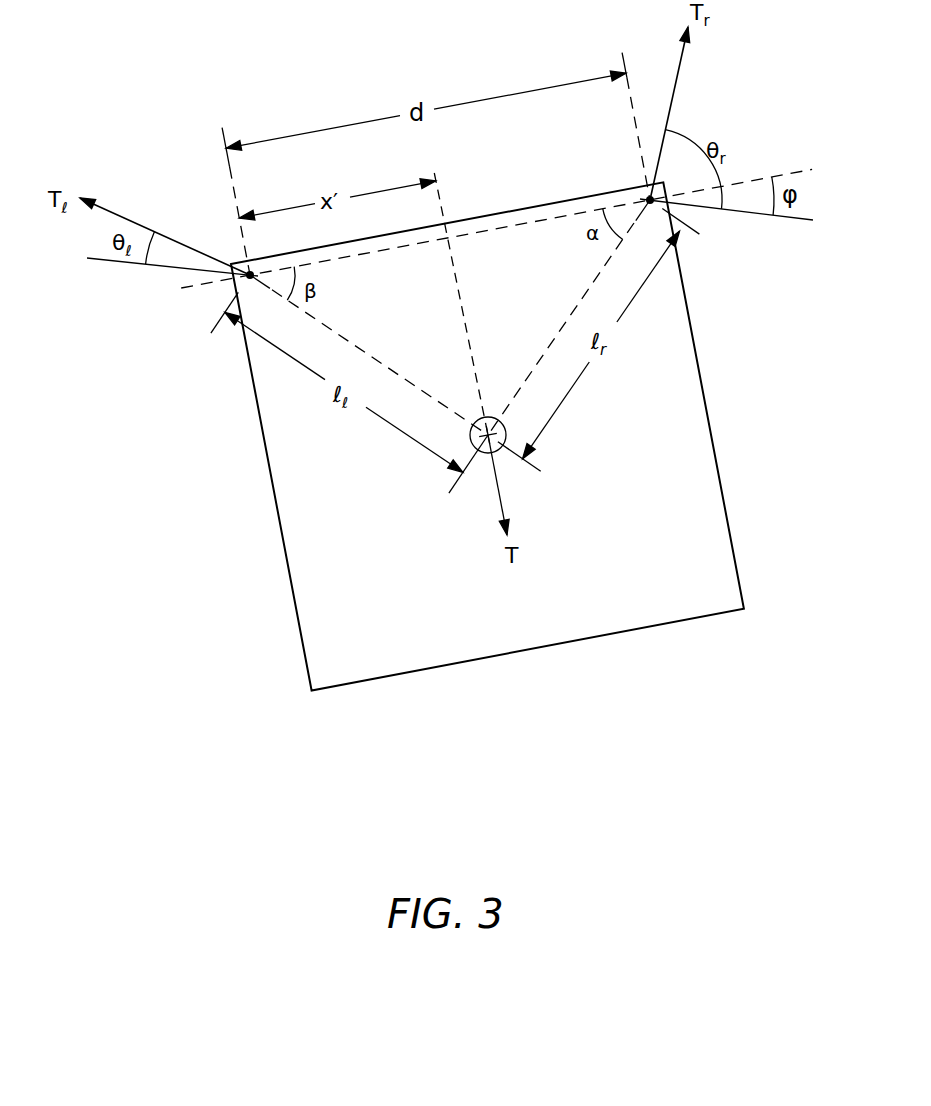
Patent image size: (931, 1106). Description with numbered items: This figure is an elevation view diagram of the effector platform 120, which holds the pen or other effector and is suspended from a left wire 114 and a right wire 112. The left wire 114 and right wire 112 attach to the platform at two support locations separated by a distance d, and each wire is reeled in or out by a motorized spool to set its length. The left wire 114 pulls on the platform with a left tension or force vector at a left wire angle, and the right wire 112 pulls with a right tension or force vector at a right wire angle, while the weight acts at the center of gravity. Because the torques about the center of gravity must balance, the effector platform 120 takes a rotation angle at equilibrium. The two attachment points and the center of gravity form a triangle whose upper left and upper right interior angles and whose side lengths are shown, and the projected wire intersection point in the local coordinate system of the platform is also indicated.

The right wire 112 is at (674, 94).
The left wire 114 is at (140, 226).
The effector platform 120 is at (580, 640).